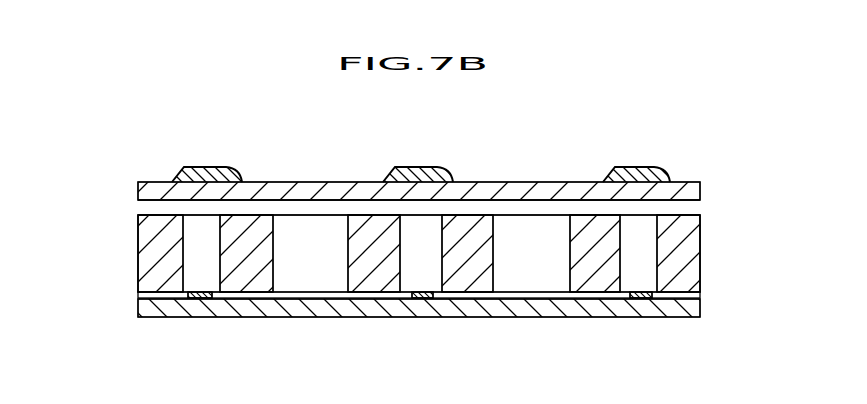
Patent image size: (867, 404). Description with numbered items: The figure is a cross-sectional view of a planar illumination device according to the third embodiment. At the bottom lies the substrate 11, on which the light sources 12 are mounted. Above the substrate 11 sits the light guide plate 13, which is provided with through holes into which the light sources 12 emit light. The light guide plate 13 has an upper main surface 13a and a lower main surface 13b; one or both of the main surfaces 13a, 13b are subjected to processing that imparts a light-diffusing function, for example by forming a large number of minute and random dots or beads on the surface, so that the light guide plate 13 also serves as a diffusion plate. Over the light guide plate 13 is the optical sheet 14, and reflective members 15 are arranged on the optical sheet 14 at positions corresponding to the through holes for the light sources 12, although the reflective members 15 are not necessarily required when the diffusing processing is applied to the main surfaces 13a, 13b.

The substrate 11 is at (687, 312).
The light sources 12 is at (638, 298).
The light guide plate 13 is at (680, 261).
The upper main surface 13a is at (148, 213).
The lower main surface 13b is at (148, 295).
The optical sheet 14 is at (680, 193).
The reflective members 15 is at (668, 166).